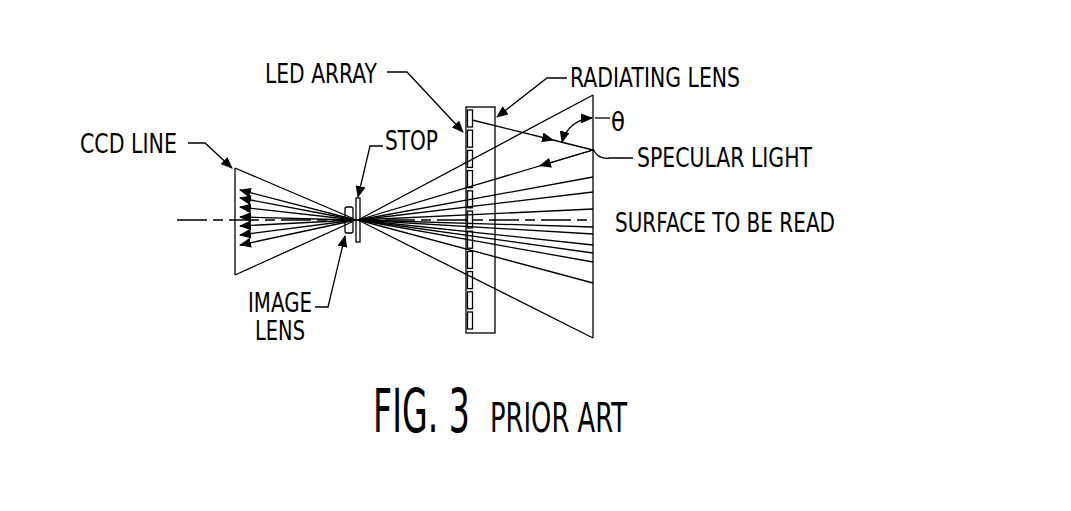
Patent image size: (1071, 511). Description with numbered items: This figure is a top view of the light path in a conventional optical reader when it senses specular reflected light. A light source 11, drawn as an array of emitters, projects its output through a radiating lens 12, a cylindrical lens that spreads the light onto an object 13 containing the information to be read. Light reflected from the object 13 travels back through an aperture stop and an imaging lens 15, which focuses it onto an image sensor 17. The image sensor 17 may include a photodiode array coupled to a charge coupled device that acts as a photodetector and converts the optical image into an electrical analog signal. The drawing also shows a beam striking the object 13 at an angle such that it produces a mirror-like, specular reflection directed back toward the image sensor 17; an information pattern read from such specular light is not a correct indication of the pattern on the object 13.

The light source 11 is at (467, 107).
The radiating lens 12 is at (485, 107).
The object 13 is at (595, 326).
The imaging lens 15 is at (345, 208).
The image sensor 17 is at (235, 266).